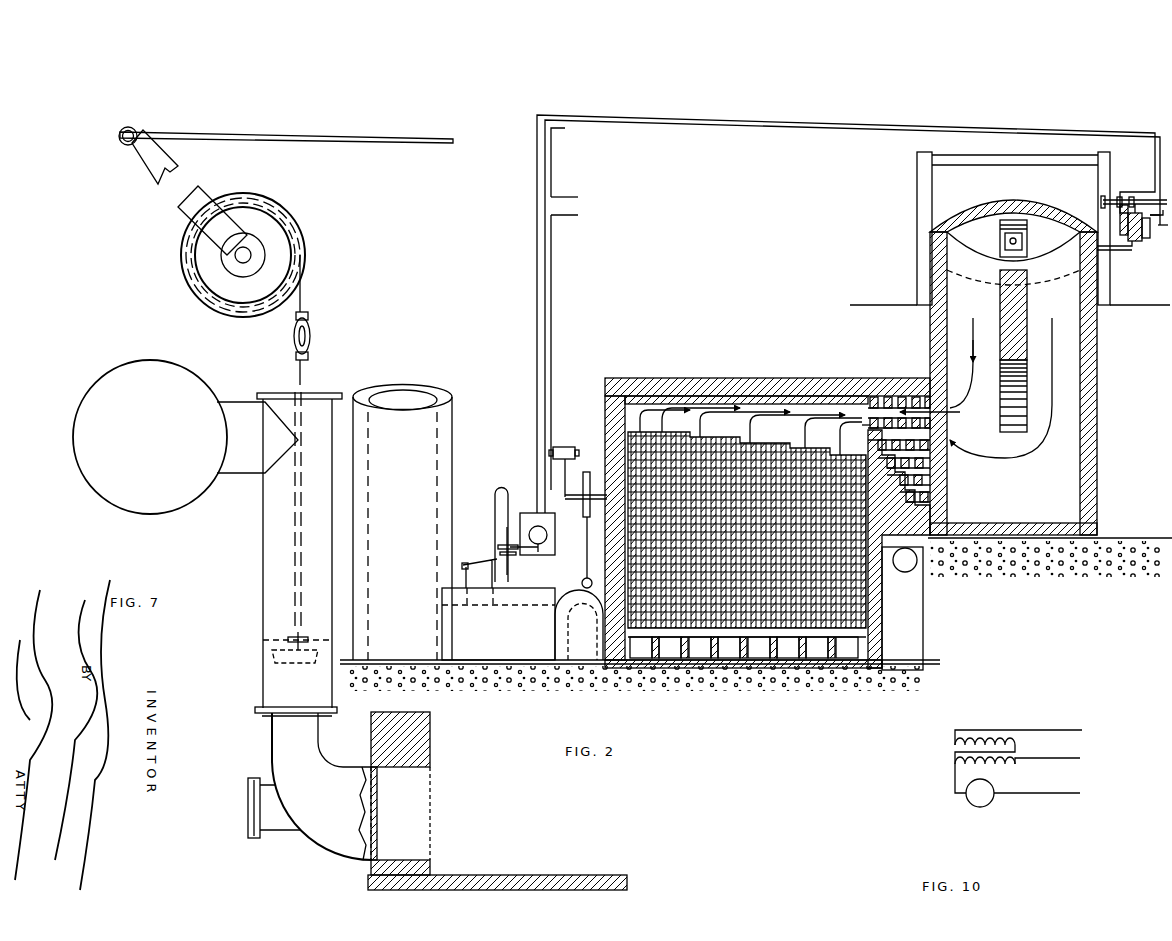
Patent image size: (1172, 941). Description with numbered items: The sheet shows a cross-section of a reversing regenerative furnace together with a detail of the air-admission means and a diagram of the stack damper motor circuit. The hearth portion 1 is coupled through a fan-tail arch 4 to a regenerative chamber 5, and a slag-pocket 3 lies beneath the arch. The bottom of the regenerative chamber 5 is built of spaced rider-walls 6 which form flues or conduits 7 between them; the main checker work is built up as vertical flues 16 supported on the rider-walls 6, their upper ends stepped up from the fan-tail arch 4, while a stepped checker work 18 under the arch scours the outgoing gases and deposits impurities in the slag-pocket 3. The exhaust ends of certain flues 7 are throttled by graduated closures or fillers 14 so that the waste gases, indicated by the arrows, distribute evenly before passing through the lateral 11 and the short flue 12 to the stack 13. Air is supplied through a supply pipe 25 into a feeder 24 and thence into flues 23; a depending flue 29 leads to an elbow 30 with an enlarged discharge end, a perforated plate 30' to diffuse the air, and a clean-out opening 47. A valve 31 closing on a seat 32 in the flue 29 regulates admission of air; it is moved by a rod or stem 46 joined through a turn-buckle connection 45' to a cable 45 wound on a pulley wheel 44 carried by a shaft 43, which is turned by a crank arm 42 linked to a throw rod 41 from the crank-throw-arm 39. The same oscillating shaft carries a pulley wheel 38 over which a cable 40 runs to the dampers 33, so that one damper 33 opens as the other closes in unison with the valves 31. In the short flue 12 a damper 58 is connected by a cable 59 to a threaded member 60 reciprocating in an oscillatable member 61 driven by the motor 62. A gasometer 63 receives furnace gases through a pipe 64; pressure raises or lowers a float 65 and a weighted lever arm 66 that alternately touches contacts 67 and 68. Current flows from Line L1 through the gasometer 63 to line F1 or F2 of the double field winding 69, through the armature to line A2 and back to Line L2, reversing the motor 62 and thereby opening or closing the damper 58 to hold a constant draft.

In FIG. 2, the melting chamber or hearth portion 1 is at (1013, 274).
In FIG. 2, the slag-pocket 3 is at (1013, 367).
In FIG. 2, the fan-tail arch 4 is at (912, 400).
In FIG. 2, the regenerative chamber 5 is at (738, 400).
In FIG. 2, the rider-wall 6 is at (648, 660).
In FIG. 7, the flue or conduit 7 is at (497, 801).
In FIG. 2, the flue or conduit 7 is at (744, 647).
In FIG. 2, the lateral 11 is at (579, 625).
In FIG. 2, the short flue 12 is at (498, 624).
In FIG. 2, the stack 13 is at (402, 523).
In FIG. 2, the closure or filler 14 is at (633, 660).
In FIG. 2, the vertical flue 16 is at (664, 440).
In FIG. 2, the checker work 18 is at (960, 410).
In FIG. 7, the flue 23 is at (120, 494).
In FIG. 2, the feeder 24 is at (911, 572).
In FIG. 2, the supply pipe 25 is at (895, 571).
In FIG. 7, the flue 29 is at (267, 595).
In FIG. 7, the elbow 30 is at (316, 791).
In FIG. 7, the perforated plate 30' is at (383, 813).
In FIG. 7, the valve 31 is at (280, 657).
In FIG. 7, the seat 32 is at (280, 713).
In FIG. 2, the damper 33 is at (583, 581).
In FIG. 2, the pulley wheel 38 is at (586, 493).
In FIG. 2, the crank-throw-arm 39 is at (562, 466).
In FIG. 2, the cable 40 is at (586, 538).
In FIG. 7, the throw rod 41 is at (293, 135).
In FIG. 2, the throw rod 41 is at (563, 447).
In FIG. 7, the crank arm 42 is at (151, 167).
In FIG. 7, the shaft 43 is at (240, 260).
In FIG. 7, the pulley wheel 44 is at (223, 288).
In FIG. 7, the cable 45 is at (316, 283).
In FIG. 7, the turn-buckle connection 45' is at (320, 336).
In FIG. 7, the rod or stem 46 is at (302, 370).
In FIG. 7, the clean-out opening 47 is at (248, 818).
In FIG. 2, the damper 58 is at (480, 562).
In FIG. 2, the cable or flexible member 59 is at (495, 511).
In FIG. 2, the threaded member 60 is at (510, 567).
In FIG. 2, the oscillatable member 61 is at (516, 553).
In FIG. 2, the motor 62 is at (550, 545).
In FIG. 10, the motor 62 is at (978, 797).
In FIG. 2, the gasometer 63 is at (1145, 241).
In FIG. 2, the pipe 64 is at (1118, 252).
In FIG. 2, the float 65 is at (1125, 205).
In FIG. 2, the weighted lever arm 66 is at (1133, 197).
In FIG. 2, the contact 67 is at (1155, 201).
In FIG. 2, the contact 68 is at (1164, 228).
In FIG. 10, the double field winding 69 is at (976, 760).
In FIG. 2, the Line 1 L1 is at (848, 314).
In FIG. 2, the Line 2 L2 is at (575, 347).
In FIG. 2, the line F1 is at (534, 520).
In FIG. 10, the line F1 is at (1047, 753).
In FIG. 2, the line F2 is at (542, 520).
In FIG. 10, the line F2 is at (1018, 730).
In FIG. 2, the line A2 is at (547, 523).
In FIG. 10, the line A2 is at (1039, 792).